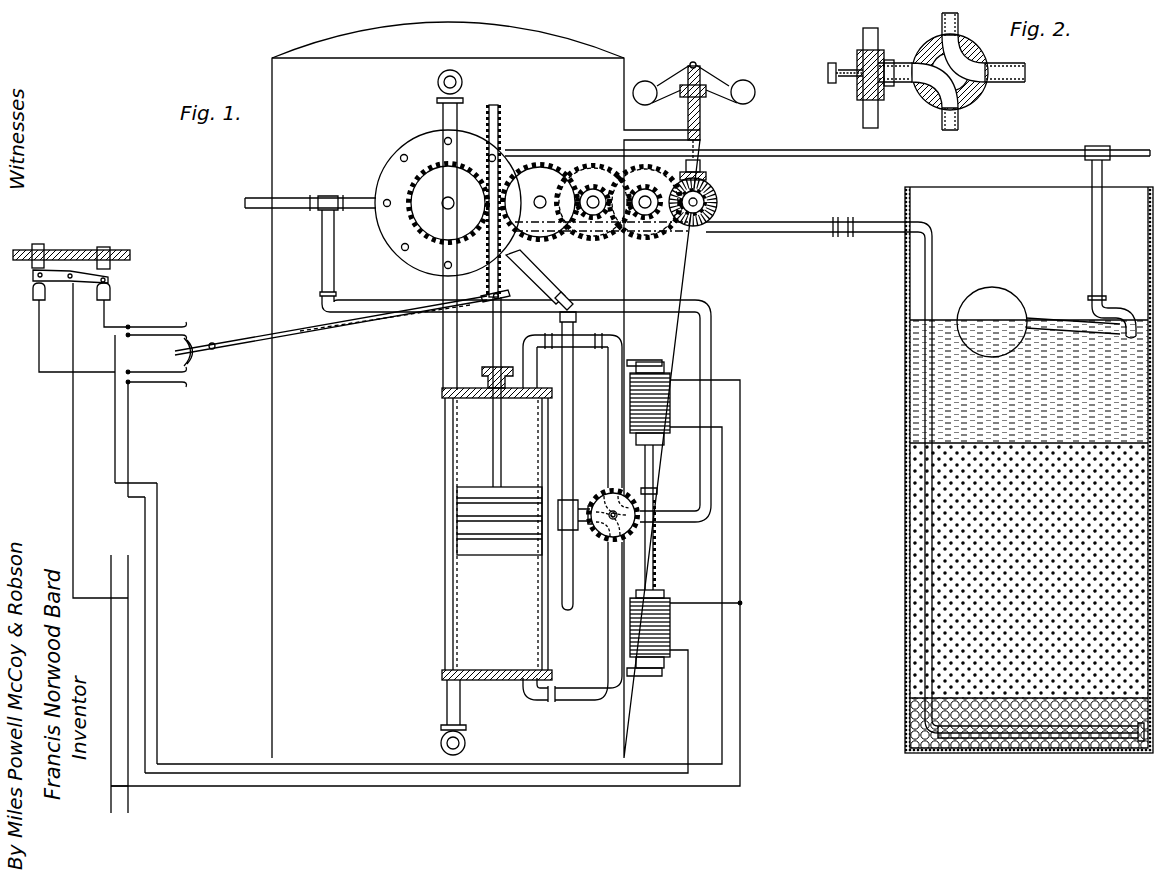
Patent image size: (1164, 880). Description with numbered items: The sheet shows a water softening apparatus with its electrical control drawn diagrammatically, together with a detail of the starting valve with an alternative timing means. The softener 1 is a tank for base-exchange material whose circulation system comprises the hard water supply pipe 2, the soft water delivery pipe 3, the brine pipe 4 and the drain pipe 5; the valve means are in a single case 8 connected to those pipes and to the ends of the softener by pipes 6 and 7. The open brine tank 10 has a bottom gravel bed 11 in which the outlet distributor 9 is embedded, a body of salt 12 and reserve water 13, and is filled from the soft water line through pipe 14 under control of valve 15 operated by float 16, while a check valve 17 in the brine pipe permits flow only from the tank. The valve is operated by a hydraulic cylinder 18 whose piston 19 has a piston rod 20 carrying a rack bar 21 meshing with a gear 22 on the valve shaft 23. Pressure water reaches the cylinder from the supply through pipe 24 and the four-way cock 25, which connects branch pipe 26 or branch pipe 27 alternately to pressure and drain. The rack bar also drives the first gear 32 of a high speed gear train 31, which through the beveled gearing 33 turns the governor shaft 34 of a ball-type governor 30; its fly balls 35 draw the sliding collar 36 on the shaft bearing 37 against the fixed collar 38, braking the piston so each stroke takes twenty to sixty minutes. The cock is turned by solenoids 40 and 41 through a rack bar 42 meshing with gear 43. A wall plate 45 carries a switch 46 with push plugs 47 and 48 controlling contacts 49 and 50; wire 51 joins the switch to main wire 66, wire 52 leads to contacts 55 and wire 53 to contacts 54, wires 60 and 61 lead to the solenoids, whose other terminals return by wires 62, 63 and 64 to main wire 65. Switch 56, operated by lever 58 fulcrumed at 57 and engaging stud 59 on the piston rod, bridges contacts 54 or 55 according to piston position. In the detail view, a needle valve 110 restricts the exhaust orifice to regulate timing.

In FIG. 1, the softening tank 1 is at (270, 170).
In FIG. 1, the hard water supply pipe 2 is at (260, 213).
In FIG. 1, the soft water delivery pipe 3 is at (806, 156).
In FIG. 1, the brine pipe 4 is at (774, 233).
In FIG. 1, the drain pipe 5 is at (574, 420).
In FIG. 2, the drain pipe 5 is at (862, 40).
In FIG. 1, the pipe 6 is at (443, 116).
In FIG. 1, the pipe 7 is at (446, 699).
In FIG. 1, the valve case 8 is at (382, 166).
In FIG. 1, the outlet distributor 9 is at (1020, 742).
In FIG. 1, the brine tank 10 is at (905, 566).
In FIG. 1, the gravel bed 11 is at (1064, 740).
In FIG. 1, the body of salt 12 is at (948, 628).
In FIG. 1, the reserve water 13 is at (950, 403).
In FIG. 1, the pipe 14 is at (1091, 232).
In FIG. 1, the valve 15 is at (1092, 310).
In FIG. 1, the float 16 is at (1004, 296).
In FIG. 1, the check valve 17 is at (843, 236).
In FIG. 1, the hydraulic cylinder 18 is at (445, 454).
In FIG. 1, the piston 19 is at (460, 512).
In FIG. 1, the piston rod 20 is at (492, 425).
In FIG. 1, the rack bar 21 is at (503, 132).
In FIG. 1, the gear 22 is at (438, 238).
In FIG. 1, the valve shaft 23 is at (442, 206).
In FIG. 1, the pipe 24 is at (712, 350).
In FIG. 2, the pipe 24 is at (1010, 82).
In FIG. 1, the valve 25 is at (636, 503).
In FIG. 2, the valve 25 is at (964, 46).
In FIG. 1, the branch pipe 26 is at (608, 455).
In FIG. 2, the branch pipe 26 is at (942, 24).
In FIG. 1, the branch pipe 27 is at (606, 638).
In FIG. 2, the branch pipe 27 is at (958, 120).
In FIG. 1, the ball-type governor 30 is at (700, 62).
In FIG. 1, the high speed gear train 31 is at (632, 246).
In FIG. 1, the first gear 32 is at (552, 242).
In FIG. 1, the beveled gearing 33 is at (710, 186).
In FIG. 1, the governor shaft 34 is at (700, 162).
In FIG. 1, the fly balls 35 is at (647, 80).
In FIG. 1, the sliding collar 36 is at (702, 100).
In FIG. 1, the shaft bearing 37 is at (686, 114).
In FIG. 1, the fixed collar 38 is at (690, 62).
In FIG. 1, the solenoid 40 is at (668, 632).
In FIG. 1, the solenoid 41 is at (674, 404).
In FIG. 1, the rack bar 42 is at (656, 570).
In FIG. 1, the gear 43 is at (596, 538).
In FIG. 1, the wall plate 45 is at (124, 250).
In FIG. 1, the switch 46 is at (86, 285).
In FIG. 1, the push plug 47 is at (40, 244).
In FIG. 1, the push plug 48 is at (104, 247).
In FIG. 1, the contact 49 is at (32, 290).
In FIG. 1, the contact 50 is at (110, 288).
In FIG. 1, the wire 51 is at (72, 460).
In FIG. 1, the wire 52 is at (38, 338).
In FIG. 1, the wire 53 is at (110, 320).
In FIG. 1, the pair of contacts 54 is at (168, 329).
In FIG. 1, the pair of contacts 55 is at (173, 376).
In FIG. 1, the switch 56 is at (182, 350).
In FIG. 1, the fulcrum 57 is at (216, 348).
In FIG. 1, the lever 58 is at (310, 332).
In FIG. 1, the stud 59 is at (490, 304).
In FIG. 1, the wire 60 is at (147, 616).
In FIG. 1, the wire 61 is at (160, 644).
In FIG. 1, the wire 62 is at (700, 604).
In FIG. 1, the wire 63 is at (730, 380).
In FIG. 1, the wire 64 is at (330, 786).
In FIG. 1, the main wire 65 is at (110, 754).
In FIG. 1, the main wire 66 is at (127, 694).
In FIG. 2, the needle valve 110 is at (892, 96).